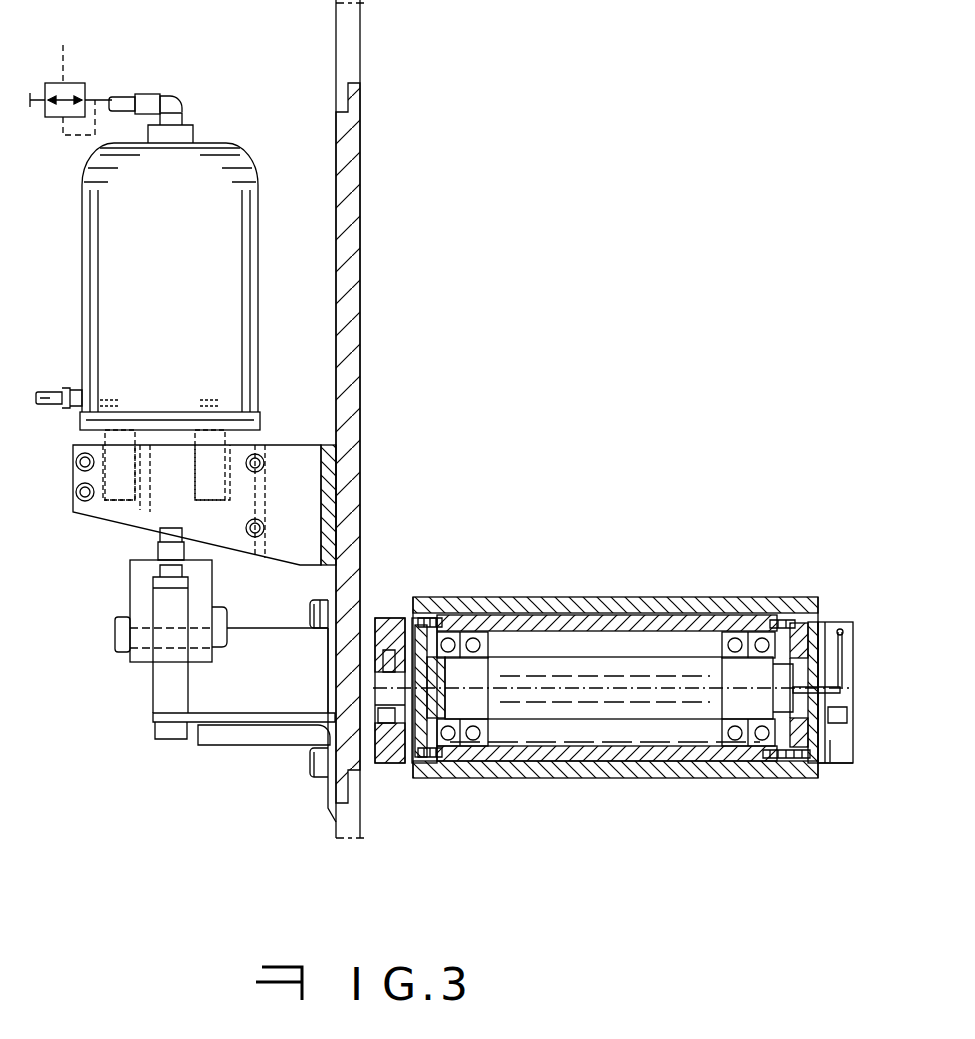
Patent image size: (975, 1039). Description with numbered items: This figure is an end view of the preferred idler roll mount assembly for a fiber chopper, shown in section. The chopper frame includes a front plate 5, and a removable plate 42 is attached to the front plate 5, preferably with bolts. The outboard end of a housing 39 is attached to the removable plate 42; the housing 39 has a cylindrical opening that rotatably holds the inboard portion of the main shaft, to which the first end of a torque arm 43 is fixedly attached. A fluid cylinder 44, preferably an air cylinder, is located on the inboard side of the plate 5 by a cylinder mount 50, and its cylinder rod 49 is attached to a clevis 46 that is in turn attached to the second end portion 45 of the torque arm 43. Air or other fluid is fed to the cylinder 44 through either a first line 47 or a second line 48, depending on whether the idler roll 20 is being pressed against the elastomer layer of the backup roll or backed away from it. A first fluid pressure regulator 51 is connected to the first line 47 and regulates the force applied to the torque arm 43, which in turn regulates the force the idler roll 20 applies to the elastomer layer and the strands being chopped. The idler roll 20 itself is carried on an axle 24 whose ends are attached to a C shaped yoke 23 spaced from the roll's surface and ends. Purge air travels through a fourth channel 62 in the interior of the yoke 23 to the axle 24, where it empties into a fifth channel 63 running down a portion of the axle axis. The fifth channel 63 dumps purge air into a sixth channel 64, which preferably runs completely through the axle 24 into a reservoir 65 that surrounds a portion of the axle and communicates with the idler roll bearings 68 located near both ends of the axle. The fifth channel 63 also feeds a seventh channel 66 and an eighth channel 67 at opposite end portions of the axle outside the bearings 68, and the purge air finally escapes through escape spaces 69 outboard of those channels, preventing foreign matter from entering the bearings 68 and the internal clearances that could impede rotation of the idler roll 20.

The front plate 5 is at (362, 24).
The idler roll 20 is at (552, 606).
The C shaped yoke 23 is at (382, 618).
The axle 24 is at (848, 690).
The housing 39 is at (285, 670).
The removable plate 42 is at (362, 240).
The torque arm 43 is at (165, 694).
The fluid cylinder 44 is at (95, 228).
The second end portion 45 is at (178, 621).
The clevis 46 is at (131, 580).
The first line 47 is at (124, 96).
The second line 48 is at (49, 392).
The cylinder rod 49 is at (160, 492).
The cylinder mount 50 is at (66, 471).
The first fluid pressure regulator 51 is at (76, 83).
The fourth channel 62 is at (840, 638).
The fifth channel 63 is at (659, 764).
The sixth channel 64 is at (622, 662).
The reservoir 65 is at (656, 638).
The seventh channel 66 is at (415, 620).
The eighth channel 67 is at (820, 752).
The idler roll bearings 68 is at (481, 746).
The escape spaces 69 is at (452, 755).